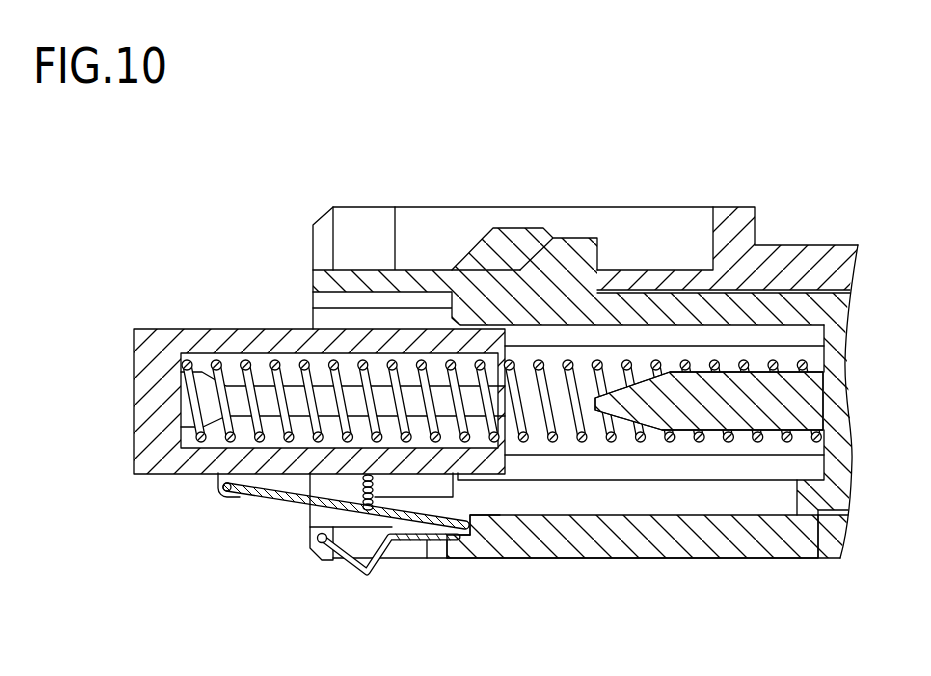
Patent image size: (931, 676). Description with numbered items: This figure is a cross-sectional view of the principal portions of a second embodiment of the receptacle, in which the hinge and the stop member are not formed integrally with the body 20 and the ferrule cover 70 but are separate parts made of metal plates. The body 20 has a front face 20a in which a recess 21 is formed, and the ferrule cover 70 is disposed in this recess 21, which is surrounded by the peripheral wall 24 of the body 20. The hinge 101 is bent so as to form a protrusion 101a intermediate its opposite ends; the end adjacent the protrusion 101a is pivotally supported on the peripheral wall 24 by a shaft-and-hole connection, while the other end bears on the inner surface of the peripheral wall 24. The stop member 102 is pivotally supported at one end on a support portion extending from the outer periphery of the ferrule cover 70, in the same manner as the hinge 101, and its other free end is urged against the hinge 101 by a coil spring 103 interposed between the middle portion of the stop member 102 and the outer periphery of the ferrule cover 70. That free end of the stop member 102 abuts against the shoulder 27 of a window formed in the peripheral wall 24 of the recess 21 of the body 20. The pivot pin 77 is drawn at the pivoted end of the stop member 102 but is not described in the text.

The body 20 is at (743, 558).
The front face 20a is at (312, 282).
The recess 21 is at (627, 515).
The peripheral wall 24 is at (320, 555).
The shoulder 27 is at (463, 515).
The ferrule cover 70 is at (224, 328).
The pivot pin 77 is at (224, 489).
The hinge 101 is at (427, 542).
The protrusion 101a is at (369, 578).
The stop member 102 is at (273, 499).
The coil spring 103 is at (363, 478).